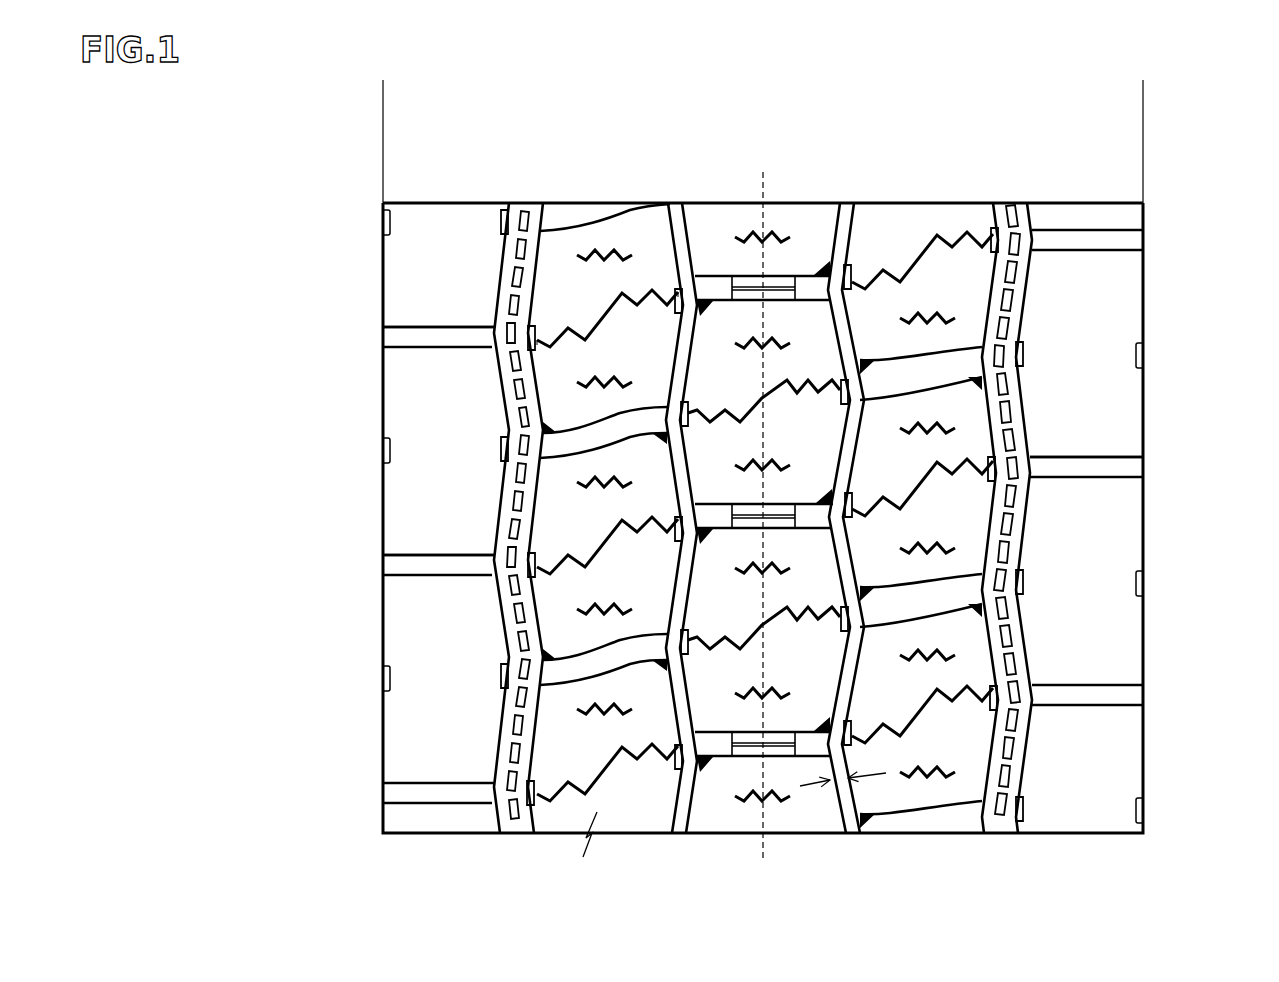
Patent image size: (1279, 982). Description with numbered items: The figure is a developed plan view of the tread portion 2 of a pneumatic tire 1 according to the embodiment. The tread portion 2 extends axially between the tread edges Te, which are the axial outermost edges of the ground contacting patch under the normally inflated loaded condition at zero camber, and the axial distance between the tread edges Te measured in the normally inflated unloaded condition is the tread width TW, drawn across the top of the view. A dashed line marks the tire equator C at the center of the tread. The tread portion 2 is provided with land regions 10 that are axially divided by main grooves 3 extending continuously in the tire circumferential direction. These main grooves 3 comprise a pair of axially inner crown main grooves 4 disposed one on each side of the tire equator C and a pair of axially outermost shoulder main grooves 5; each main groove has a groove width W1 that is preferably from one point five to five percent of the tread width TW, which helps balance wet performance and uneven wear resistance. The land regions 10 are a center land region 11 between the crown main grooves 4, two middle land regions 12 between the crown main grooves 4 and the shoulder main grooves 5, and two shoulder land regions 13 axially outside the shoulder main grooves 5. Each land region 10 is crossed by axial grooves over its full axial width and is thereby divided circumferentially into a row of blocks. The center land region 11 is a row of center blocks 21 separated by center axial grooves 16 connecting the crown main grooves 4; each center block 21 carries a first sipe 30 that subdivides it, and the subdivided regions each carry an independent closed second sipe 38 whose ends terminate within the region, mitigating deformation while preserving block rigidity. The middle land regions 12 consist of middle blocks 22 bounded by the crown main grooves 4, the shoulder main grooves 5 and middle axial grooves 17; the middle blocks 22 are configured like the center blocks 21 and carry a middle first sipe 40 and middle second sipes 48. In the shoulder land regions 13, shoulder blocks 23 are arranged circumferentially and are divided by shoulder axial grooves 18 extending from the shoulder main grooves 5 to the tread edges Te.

The tire 1 is at (808, 201).
The tread portion 2 is at (960, 201).
The main grooves 3 is at (1000, 893).
The crown main grooves 4 is at (680, 819).
The shoulder main grooves 5 is at (520, 804).
The land regions 10 is at (715, 147).
The center land region 11 is at (713, 246).
The middle land regions 12 is at (625, 241).
The shoulder land regions 13 is at (460, 229).
The center axial grooves 16 is at (811, 290).
The middle axial grooves 17 is at (585, 669).
The shoulder axial grooves 18 is at (437, 341).
The center blocks 21 is at (785, 369).
The middle blocks 22 is at (588, 295).
The shoulder blocks 23 is at (437, 500).
The first sipe 30 is at (766, 400).
The second sipe 38 is at (771, 568).
The middle first sipe 40 is at (602, 317).
The middle second sipes 48 is at (602, 391).
The tread width TW is at (1142, 85).
The groove width W1 is at (838, 806).
The tire equator C is at (761, 505).
The tread edges Te is at (382, 243).